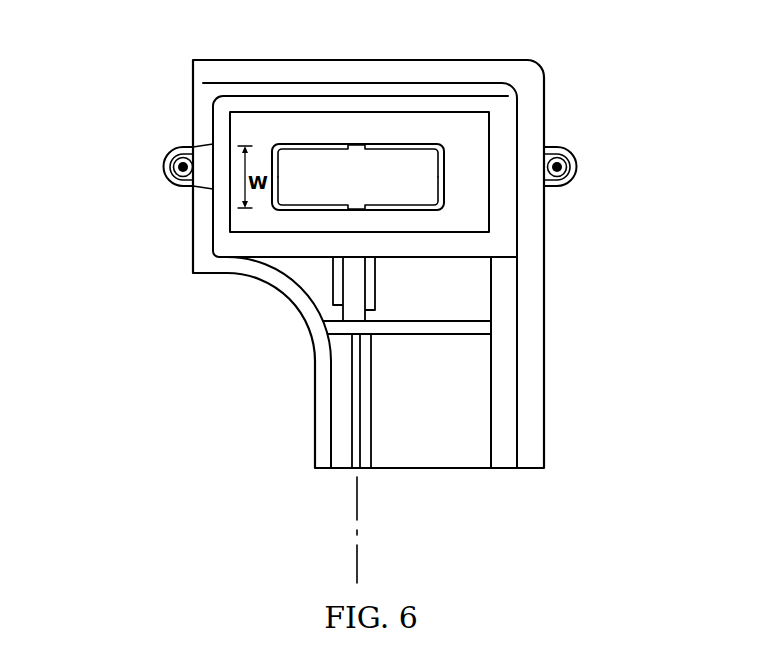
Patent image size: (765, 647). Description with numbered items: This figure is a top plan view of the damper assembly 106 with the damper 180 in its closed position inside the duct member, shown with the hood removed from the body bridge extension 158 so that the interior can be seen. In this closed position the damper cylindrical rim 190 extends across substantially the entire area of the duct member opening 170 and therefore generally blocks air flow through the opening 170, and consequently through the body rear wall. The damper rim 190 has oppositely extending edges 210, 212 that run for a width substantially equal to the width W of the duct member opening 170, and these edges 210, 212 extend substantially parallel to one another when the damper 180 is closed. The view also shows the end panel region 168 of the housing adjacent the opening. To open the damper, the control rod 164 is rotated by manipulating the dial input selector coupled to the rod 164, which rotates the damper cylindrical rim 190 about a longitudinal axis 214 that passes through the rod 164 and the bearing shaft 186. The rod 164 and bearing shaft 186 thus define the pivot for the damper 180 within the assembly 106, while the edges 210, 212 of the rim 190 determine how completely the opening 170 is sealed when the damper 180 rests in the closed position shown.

The damper assembly 106 is at (160, 38).
The body bridge extension 158 is at (533, 107).
The control rod 164 is at (357, 407).
The end panel 168 is at (467, 128).
The duct member opening 170 is at (280, 210).
The damper 180 is at (393, 173).
The bearing shaft 186 is at (355, 280).
The damper cylindrical rim 190 is at (290, 162).
The edge 210 is at (297, 210).
The edge 212 is at (388, 144).
The longitudinal axis 214 is at (358, 503).